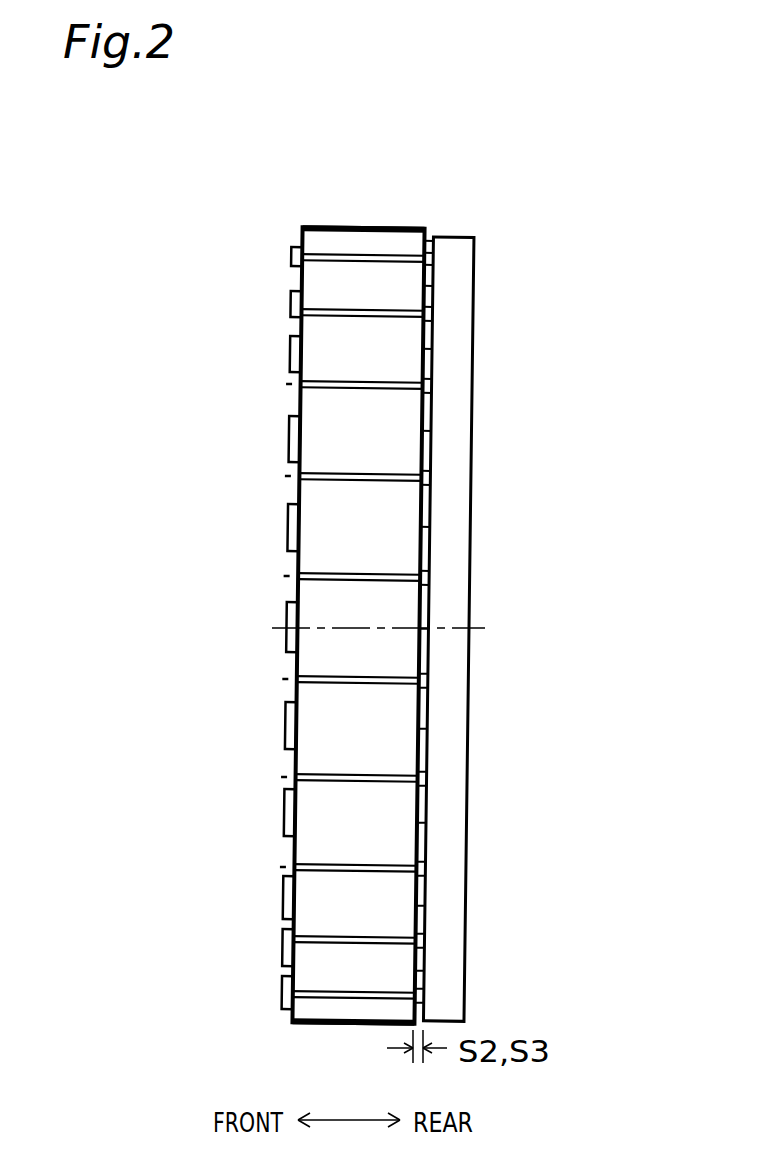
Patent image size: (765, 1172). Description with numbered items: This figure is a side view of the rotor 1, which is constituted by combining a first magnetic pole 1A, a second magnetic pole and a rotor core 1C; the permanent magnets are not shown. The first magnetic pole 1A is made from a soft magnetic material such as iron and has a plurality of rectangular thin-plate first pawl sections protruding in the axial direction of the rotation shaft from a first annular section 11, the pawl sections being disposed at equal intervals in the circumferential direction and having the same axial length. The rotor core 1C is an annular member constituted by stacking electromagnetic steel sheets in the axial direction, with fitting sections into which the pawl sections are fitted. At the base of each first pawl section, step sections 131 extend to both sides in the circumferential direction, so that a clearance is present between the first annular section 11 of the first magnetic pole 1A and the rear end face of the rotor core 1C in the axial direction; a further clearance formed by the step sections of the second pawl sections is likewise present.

The rotor 1 is at (557, 315).
The first magnetic pole 1A is at (453, 438).
The first annular section 11 is at (455, 533).
The rotor core 1C is at (361, 212).
The step sections 131 is at (432, 258).